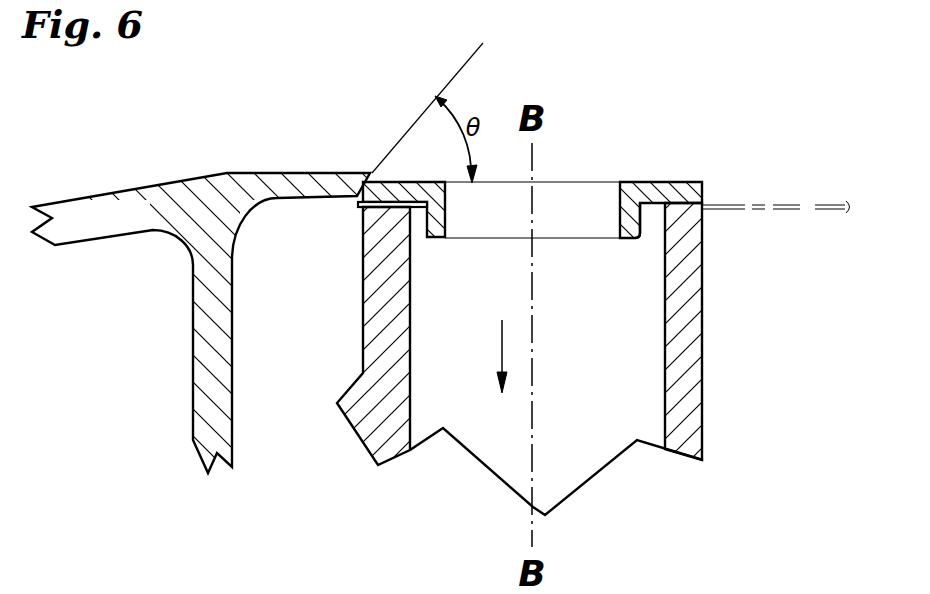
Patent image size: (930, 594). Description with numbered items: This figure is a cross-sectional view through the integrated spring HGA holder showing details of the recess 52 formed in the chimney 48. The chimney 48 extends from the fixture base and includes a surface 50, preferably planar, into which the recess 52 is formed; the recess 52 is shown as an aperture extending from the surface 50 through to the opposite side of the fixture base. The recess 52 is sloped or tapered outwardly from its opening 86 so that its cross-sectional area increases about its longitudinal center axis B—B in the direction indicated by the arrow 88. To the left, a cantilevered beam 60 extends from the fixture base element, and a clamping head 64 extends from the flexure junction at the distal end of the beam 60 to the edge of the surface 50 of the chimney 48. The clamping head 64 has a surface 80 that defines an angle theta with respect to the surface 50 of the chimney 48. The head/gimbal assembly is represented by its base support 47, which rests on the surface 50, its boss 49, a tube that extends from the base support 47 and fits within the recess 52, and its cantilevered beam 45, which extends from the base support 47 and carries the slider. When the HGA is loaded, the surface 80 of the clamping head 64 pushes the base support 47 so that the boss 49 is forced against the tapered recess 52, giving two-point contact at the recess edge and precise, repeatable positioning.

The cantilevered beam 45 is at (753, 208).
The base support 47 is at (677, 182).
The chimney 48 is at (703, 372).
The boss 49 is at (647, 240).
The surface 50 is at (405, 205).
The recess 52 is at (572, 384).
The cantilevered beam 60 is at (193, 370).
The clamping head 64 is at (262, 172).
The surface 80 is at (370, 173).
The opening 86 is at (568, 202).
The arrow 88 is at (502, 347).